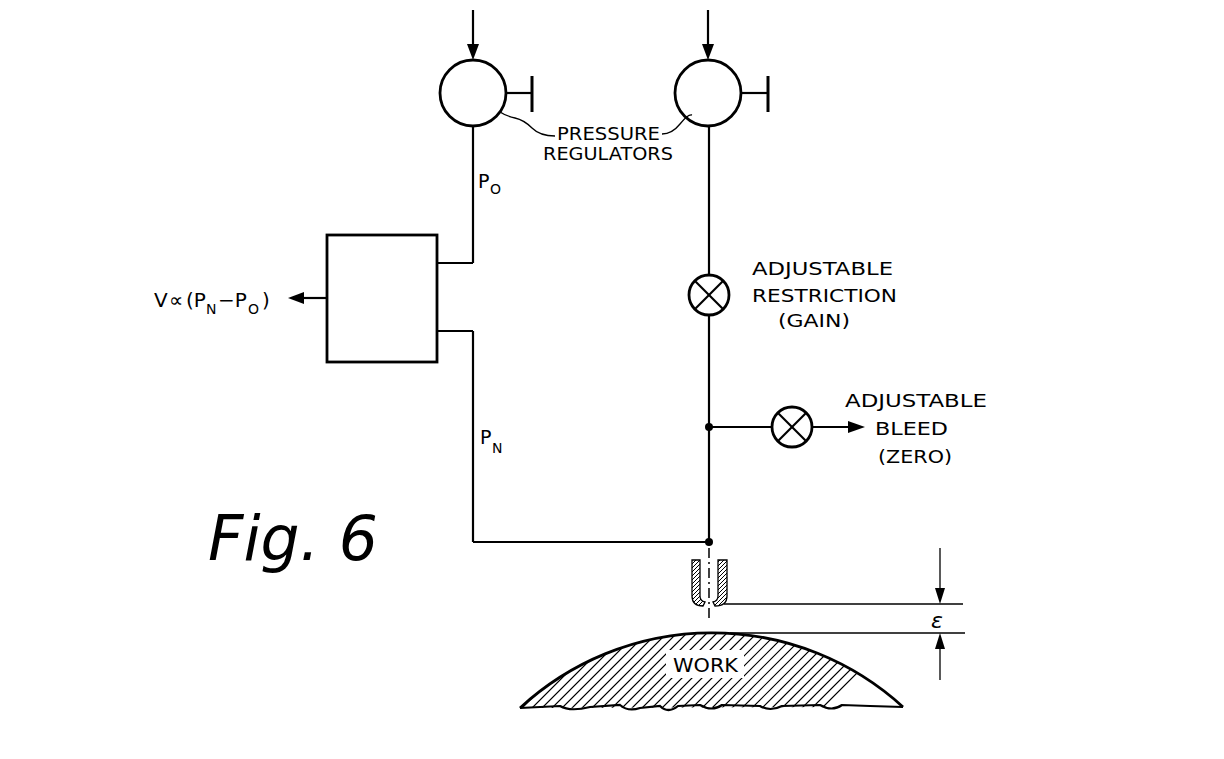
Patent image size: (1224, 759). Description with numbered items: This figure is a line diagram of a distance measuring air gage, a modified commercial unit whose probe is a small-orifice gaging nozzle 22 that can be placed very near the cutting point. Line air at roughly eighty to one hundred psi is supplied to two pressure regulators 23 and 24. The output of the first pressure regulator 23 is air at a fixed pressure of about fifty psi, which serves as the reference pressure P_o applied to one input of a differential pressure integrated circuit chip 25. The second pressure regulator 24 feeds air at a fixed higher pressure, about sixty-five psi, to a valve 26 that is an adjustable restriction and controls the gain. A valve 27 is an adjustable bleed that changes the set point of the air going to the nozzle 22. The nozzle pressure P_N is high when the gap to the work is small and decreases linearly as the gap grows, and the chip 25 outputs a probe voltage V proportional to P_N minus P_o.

The gaging nozzle 22 is at (728, 578).
The pressure regulator 23 is at (455, 80).
The pressure regulator 24 is at (730, 71).
The differential pressure integrated circuit chip 25 is at (330, 250).
The valve 26 is at (700, 281).
The valve 27 is at (785, 411).